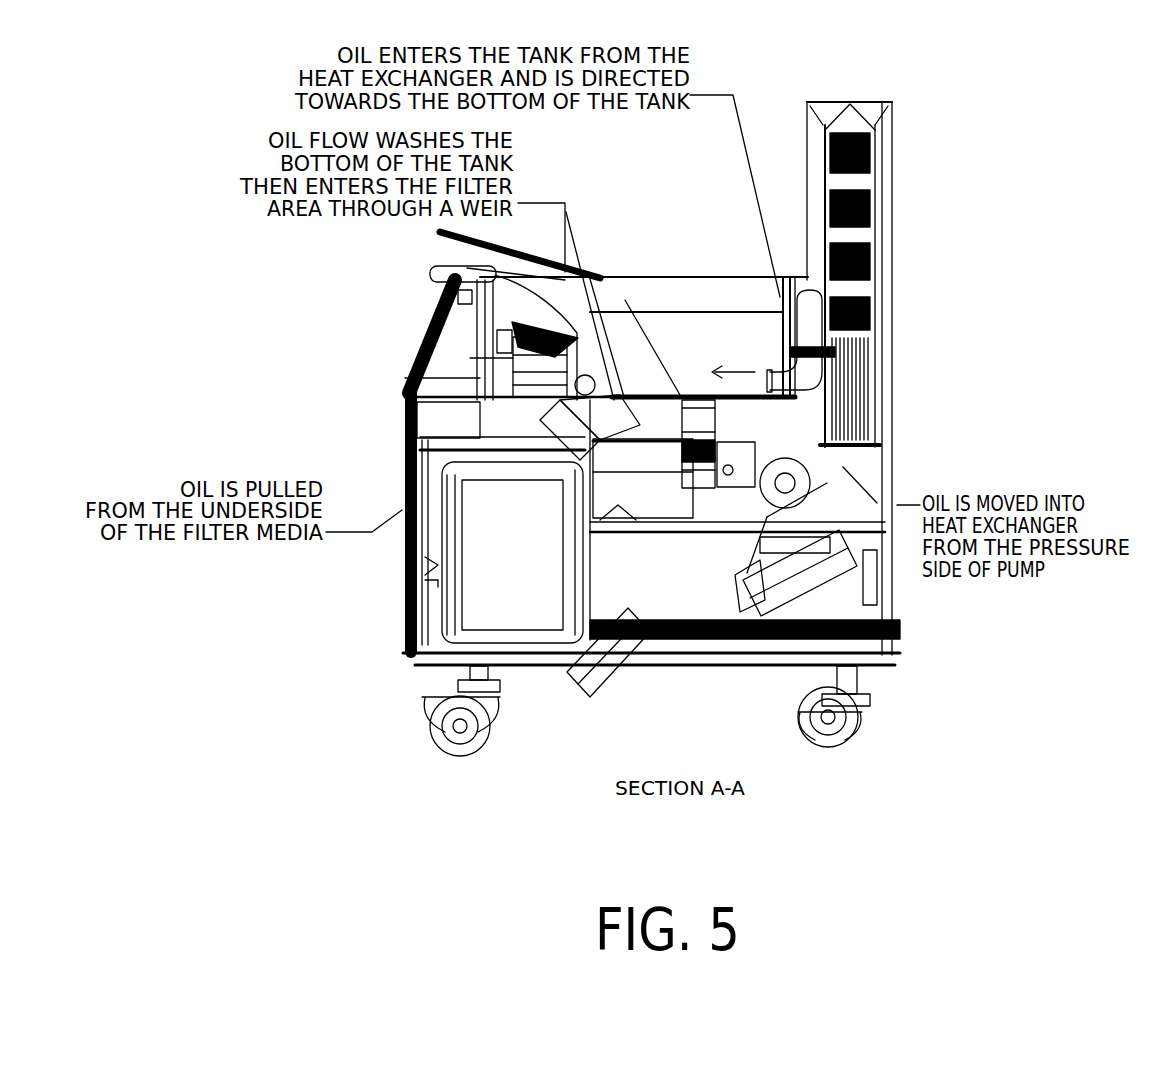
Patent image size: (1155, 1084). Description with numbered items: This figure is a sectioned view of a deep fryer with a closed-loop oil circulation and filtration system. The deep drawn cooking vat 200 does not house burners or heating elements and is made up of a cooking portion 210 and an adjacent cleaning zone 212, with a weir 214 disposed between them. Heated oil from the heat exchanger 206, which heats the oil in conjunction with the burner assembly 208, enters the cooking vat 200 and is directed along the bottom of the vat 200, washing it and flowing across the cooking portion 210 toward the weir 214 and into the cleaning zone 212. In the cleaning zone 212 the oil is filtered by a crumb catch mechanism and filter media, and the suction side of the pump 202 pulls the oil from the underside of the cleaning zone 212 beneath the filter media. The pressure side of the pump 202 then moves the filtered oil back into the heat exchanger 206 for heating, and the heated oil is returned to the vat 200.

The cooking vat 200 is at (645, 297).
The pump 202 is at (643, 479).
The heat exchanger 206 is at (890, 212).
The burner assembly 208 is at (893, 597).
The cooking portion 210 is at (710, 297).
The cleaning zone 212 is at (470, 330).
The weir 214 is at (500, 258).